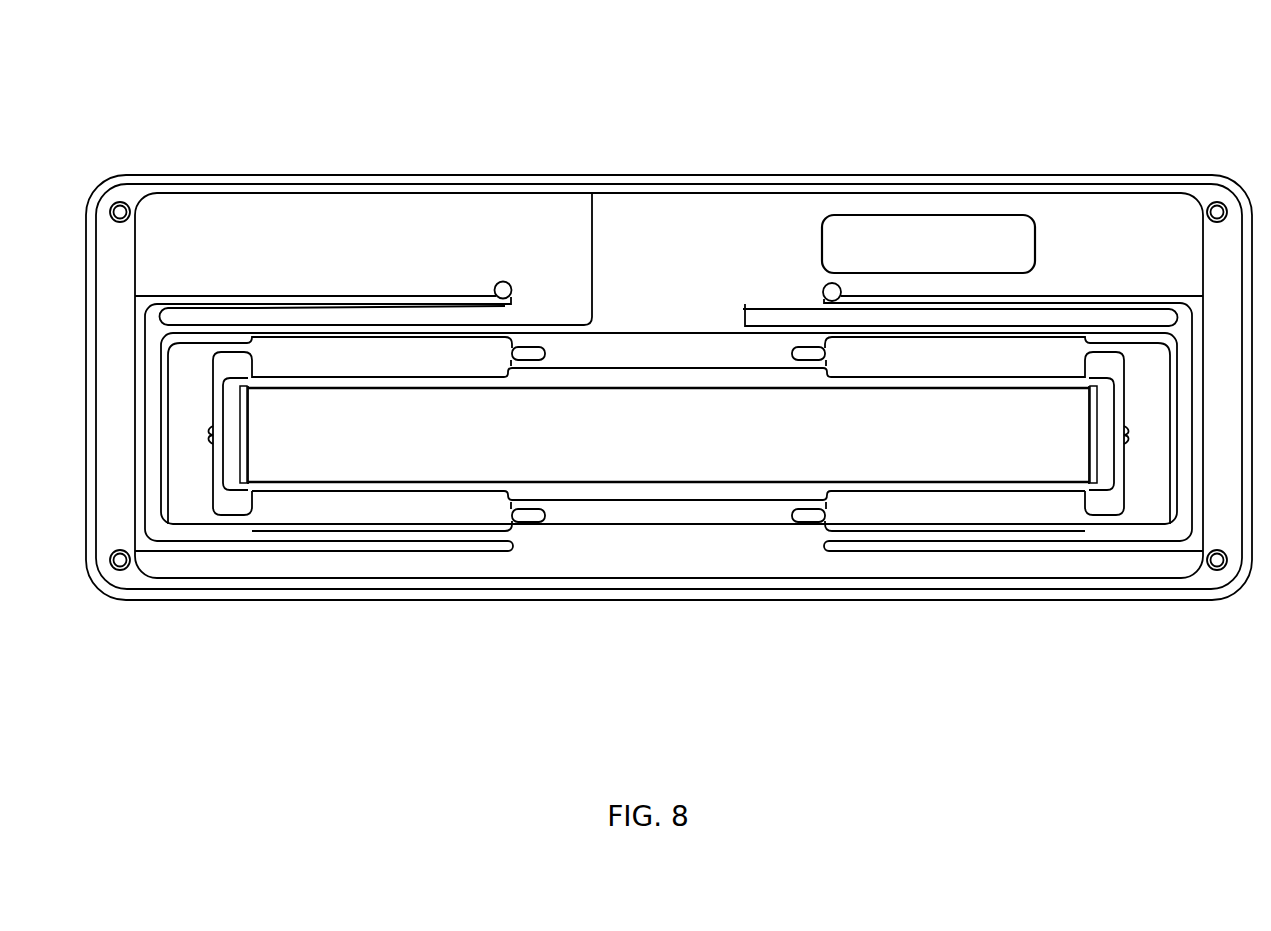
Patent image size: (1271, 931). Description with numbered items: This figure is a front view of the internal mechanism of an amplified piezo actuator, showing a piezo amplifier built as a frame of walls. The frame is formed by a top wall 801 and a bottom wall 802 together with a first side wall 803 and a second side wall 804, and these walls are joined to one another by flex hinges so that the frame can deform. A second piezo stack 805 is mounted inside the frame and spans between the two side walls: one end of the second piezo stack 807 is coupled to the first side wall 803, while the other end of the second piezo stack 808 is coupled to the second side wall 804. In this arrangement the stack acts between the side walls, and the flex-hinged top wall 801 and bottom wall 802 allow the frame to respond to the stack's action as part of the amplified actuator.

The top wall 801 is at (682, 352).
The bottom wall 802 is at (690, 545).
The first side wall 803 is at (1148, 398).
The second side wall 804 is at (190, 425).
The second piezo stack 805 is at (588, 422).
The one end of the second piezo stack 807 is at (1086, 440).
The other end of the second piezo stack 808 is at (250, 440).